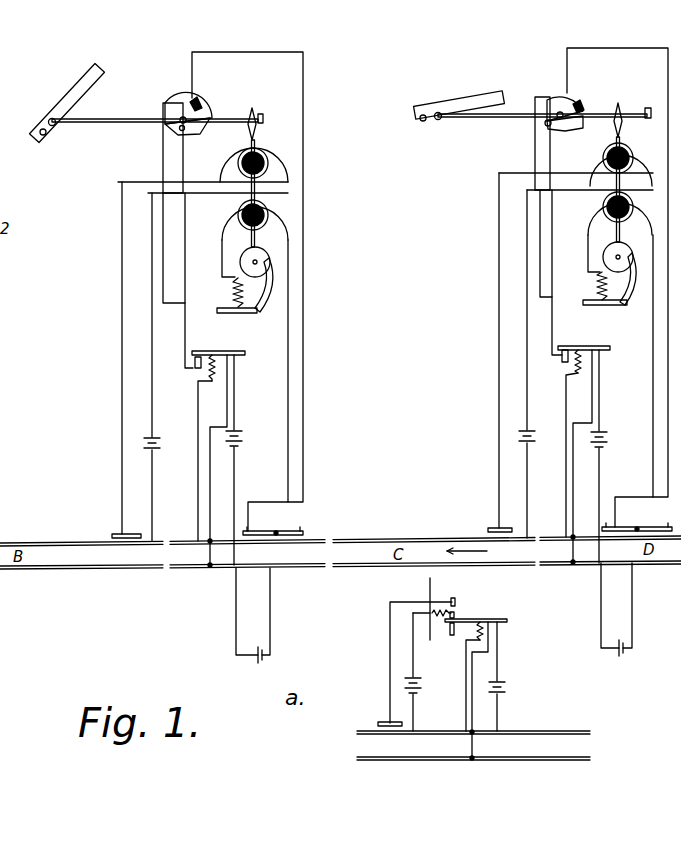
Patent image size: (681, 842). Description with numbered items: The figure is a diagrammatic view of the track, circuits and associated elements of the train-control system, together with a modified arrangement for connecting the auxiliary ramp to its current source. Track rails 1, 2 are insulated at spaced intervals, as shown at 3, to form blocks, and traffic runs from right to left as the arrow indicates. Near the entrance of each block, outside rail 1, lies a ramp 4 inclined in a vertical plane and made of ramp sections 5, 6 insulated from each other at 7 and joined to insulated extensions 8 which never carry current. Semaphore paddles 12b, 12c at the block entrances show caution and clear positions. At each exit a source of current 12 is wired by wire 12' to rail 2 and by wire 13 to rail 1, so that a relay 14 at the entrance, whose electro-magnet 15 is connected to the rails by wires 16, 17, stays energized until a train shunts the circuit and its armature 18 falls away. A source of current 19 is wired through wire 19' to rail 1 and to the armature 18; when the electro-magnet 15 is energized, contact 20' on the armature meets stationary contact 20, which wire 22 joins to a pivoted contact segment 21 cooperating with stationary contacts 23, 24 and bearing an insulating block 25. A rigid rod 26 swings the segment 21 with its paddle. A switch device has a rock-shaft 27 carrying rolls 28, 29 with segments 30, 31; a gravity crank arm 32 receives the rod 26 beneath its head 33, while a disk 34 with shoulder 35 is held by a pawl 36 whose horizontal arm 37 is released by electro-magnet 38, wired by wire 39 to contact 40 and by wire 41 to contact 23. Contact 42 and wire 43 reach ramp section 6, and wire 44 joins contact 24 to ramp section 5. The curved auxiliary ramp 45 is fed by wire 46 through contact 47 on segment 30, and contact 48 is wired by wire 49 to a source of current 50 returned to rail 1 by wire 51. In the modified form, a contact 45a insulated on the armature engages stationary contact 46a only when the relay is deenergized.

In FIG. 1, the track rail 1 is at (37, 543).
In FIG. 1A, the track rail 1 is at (550, 730).
In FIG. 1, the track rail 2 is at (43, 574).
In FIG. 1A, the track rail 2 is at (550, 760).
In FIG. 1, the insulation 3 is at (212, 540).
In FIG. 1A, the insulation 3 is at (480, 745).
In FIG. 1, the ramp 4 is at (309, 528).
In FIG. 1, the ramp section 5 is at (254, 532).
In FIG. 1, the ramp section 6 is at (300, 530).
In FIG. 1, the insulation 7 is at (277, 531).
In FIG. 1, the extension 8 is at (325, 531).
In FIG. 1, the source of current 12 is at (436, 663).
In FIG. 1, the wire 12' is at (463, 609).
In FIG. 1, the semaphore paddle 12b is at (90, 80).
In FIG. 1, the semaphore paddle 12c is at (477, 100).
In FIG. 1, the wire 13 is at (235, 626).
In FIG. 1, the relay 14 is at (241, 345).
In FIG. 1A, the relay 14 is at (500, 617).
In FIG. 1, the electro-magnet 15 is at (212, 382).
In FIG. 1A, the electro-magnet 15 is at (481, 640).
In FIG. 1, the wire 16 is at (197, 404).
In FIG. 1A, the wire 16 is at (465, 669).
In FIG. 1, the wire 17 is at (228, 405).
In FIG. 1A, the wire 17 is at (471, 692).
In FIG. 1, the armature 18 is at (207, 351).
In FIG. 1A, the armature 18 is at (484, 619).
In FIG. 1, the source of current 19 is at (437, 439).
In FIG. 1A, the source of current 19 is at (521, 687).
In FIG. 1, the wire 19' is at (438, 457).
In FIG. 1A, the wire 19' is at (517, 676).
In FIG. 1, the stationary contact 20 is at (364, 380).
In FIG. 1A, the stationary contact 20 is at (446, 646).
In FIG. 1, the contact 20' is at (362, 357).
In FIG. 1A, the contact 20' is at (435, 633).
In FIG. 1, the contact segment 21 is at (186, 129).
In FIG. 1, the wire 22 is at (183, 266).
In FIG. 1, the stationary contact 23 is at (177, 96).
In FIG. 1, the stationary contact 24 is at (574, 104).
In FIG. 1, the insulating block 25 is at (194, 104).
In FIG. 1, the rod 26 is at (108, 123).
In FIG. 1, the rock-shaft 27 is at (257, 241).
In FIG. 1, the roll 28 is at (269, 158).
In FIG. 1, the roll 29 is at (268, 208).
In FIG. 1, the contact segment 30 is at (290, 187).
In FIG. 1, the contact segment 31 is at (266, 228).
In FIG. 1, the crank arm 32 is at (260, 133).
In FIG. 1, the head 33 is at (262, 117).
In FIG. 1, the disk 34 is at (239, 259).
In FIG. 1, the shoulder 35 is at (269, 259).
In FIG. 1, the holding pawl 36 is at (263, 298).
In FIG. 1, the horizontal arm 37 is at (236, 313).
In FIG. 1, the electro-magnet 38 is at (232, 293).
In FIG. 1, the wire 39 is at (222, 236).
In FIG. 1, the contact 40 is at (224, 218).
In FIG. 1, the wire 41 is at (163, 254).
In FIG. 1, the contact 42 is at (288, 222).
In FIG. 1, the wire 43 is at (289, 366).
In FIG. 1, the wire 44 is at (252, 50).
In FIG. 1, the auxiliary ramp 45 is at (115, 533).
In FIG. 1A, the auxiliary ramp 45 is at (379, 722).
In FIG. 1A, the contact 45a is at (431, 639).
In FIG. 1, the wire 46 is at (121, 461).
In FIG. 1A, the wire 46 is at (389, 679).
In FIG. 1A, the stationary contact 46a is at (453, 600).
In FIG. 1, the contact 47 is at (228, 170).
In FIG. 1, the contact 48 is at (283, 171).
In FIG. 1, the wire 49 is at (151, 392).
In FIG. 1A, the wire 49 is at (413, 649).
In FIG. 1, the source of current 50 is at (165, 442).
In FIG. 1A, the source of current 50 is at (424, 686).
In FIG. 1, the wire 51 is at (153, 503).
In FIG. 1A, the wire 51 is at (437, 736).